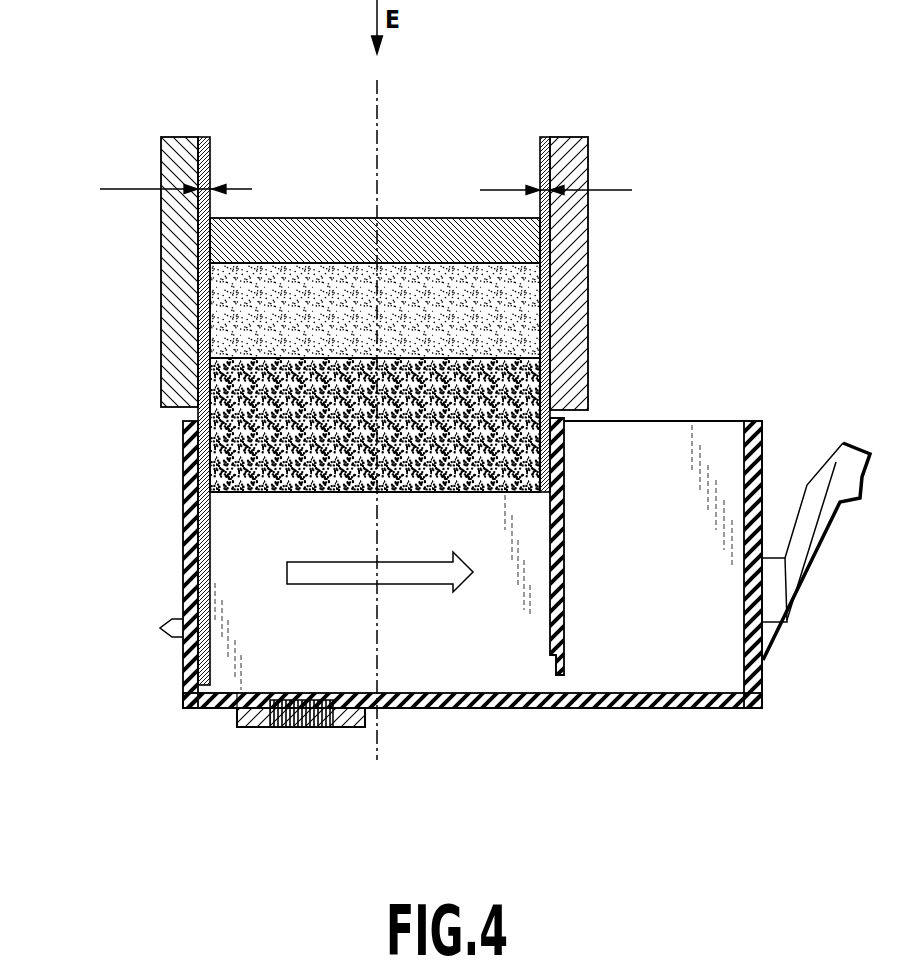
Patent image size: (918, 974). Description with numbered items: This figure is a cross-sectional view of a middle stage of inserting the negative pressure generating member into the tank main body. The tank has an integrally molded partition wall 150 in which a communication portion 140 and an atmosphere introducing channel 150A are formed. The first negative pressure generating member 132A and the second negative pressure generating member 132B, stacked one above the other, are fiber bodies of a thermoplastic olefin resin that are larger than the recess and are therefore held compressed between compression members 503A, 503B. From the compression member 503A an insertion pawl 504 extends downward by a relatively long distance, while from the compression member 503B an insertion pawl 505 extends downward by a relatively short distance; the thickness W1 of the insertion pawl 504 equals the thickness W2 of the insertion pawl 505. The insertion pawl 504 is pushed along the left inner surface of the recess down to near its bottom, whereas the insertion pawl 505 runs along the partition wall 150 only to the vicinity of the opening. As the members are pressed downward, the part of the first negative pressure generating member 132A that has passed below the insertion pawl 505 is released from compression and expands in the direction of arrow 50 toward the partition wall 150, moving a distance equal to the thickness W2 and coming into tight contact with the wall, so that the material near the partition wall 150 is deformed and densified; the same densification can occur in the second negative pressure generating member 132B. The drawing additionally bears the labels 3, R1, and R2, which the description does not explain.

The bottom protrusion with grid 3 is at (297, 725).
The arrow 50 is at (332, 587).
The first negative pressure generating member 132A is at (237, 403).
The second negative pressure generating member 132B is at (268, 308).
The communication portion 140 is at (562, 682).
The partition wall 150 is at (564, 510).
The atmosphere introducing channel 150A is at (563, 642).
The compression member 503A is at (161, 247).
The compression member 503B is at (588, 226).
The insertion pawl 504 is at (200, 137).
The insertion pawl 505 is at (545, 137).
The thickness of insertion pawl W1 is at (176, 177).
The thickness of insertion pawl W2 is at (556, 178).
The first region R1 is at (446, 660).
The second region R2 is at (720, 665).